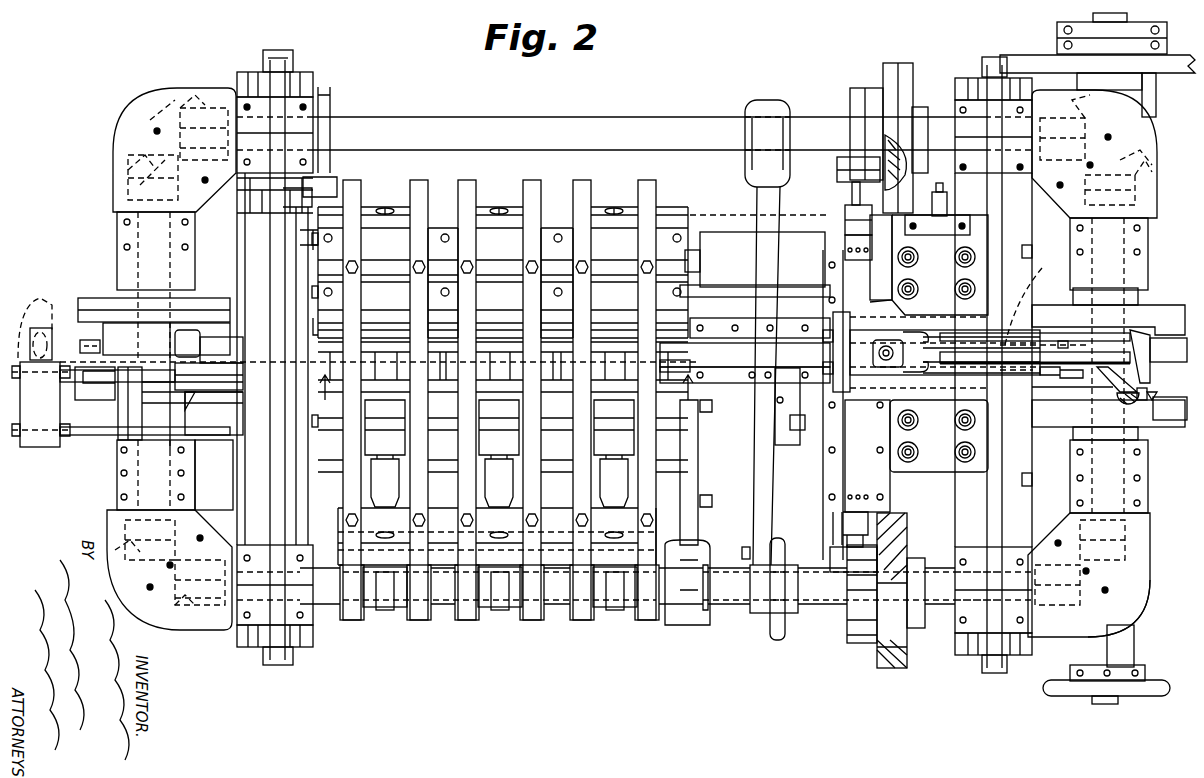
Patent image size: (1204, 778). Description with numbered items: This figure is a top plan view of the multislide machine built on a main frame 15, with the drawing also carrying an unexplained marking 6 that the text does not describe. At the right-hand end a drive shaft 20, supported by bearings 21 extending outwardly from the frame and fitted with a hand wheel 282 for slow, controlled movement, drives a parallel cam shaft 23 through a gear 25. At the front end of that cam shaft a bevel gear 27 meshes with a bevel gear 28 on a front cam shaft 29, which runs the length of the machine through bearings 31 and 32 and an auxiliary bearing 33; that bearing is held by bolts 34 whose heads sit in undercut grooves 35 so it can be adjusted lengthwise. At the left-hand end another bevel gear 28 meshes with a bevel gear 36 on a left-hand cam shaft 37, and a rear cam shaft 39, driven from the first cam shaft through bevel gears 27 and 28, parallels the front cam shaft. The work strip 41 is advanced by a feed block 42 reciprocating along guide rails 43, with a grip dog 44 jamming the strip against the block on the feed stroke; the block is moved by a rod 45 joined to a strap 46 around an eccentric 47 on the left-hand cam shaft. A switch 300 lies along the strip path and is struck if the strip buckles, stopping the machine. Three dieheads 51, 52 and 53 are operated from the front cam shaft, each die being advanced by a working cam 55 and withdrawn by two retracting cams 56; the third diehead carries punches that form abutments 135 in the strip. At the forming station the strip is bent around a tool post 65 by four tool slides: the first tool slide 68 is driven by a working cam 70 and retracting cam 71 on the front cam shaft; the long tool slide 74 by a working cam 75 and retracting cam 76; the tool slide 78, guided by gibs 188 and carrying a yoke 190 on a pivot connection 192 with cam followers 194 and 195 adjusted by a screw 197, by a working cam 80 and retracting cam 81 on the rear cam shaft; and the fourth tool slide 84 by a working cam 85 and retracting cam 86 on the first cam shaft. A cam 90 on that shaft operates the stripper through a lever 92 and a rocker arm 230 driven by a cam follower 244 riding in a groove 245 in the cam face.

The hinge pin 6 is at (500, 393).
The main frame 15 is at (700, 205).
The drive shaft 20 is at (1100, 700).
The bearings 21 is at (122, 228).
The cam shaft 23 is at (1140, 145).
The gear 25 is at (1165, 422).
The bevel gear 27 is at (1148, 170).
The bevel gear 28 is at (178, 85).
The cam shaft 29 is at (705, 628).
The bearing 31 is at (963, 130).
The bearing 32 is at (292, 100).
The auxiliary bearing 33 is at (748, 160).
The bolts 34 is at (700, 455).
The undercut grooves 35 is at (712, 425).
The bevel gear 36 is at (130, 180).
The cam shaft 37 is at (140, 488).
The cam shaft 39 is at (617, 117).
The strip 41 is at (40, 328).
The block 42 is at (32, 447).
The guide rails 43 is at (70, 382).
The grip dog 44 is at (44, 295).
The rod 45 is at (85, 400).
The strap 46 is at (93, 420).
The eccentric 47 is at (178, 422).
The diehead 51 is at (380, 175).
The diehead 52 is at (497, 175).
The diehead 53 is at (612, 175).
The working cam 55 is at (385, 615).
The retracting cams 56 is at (350, 620).
The tool post 65 is at (880, 345).
The first tool slide 68 is at (858, 478).
The working cam 70 is at (855, 645).
The retracting cam 71 is at (888, 668).
The tool slide 74 is at (220, 355).
The working cam 75 is at (128, 345).
The retracting cam 76 is at (90, 298).
The tool slide 78 is at (850, 272).
The working cam 80 is at (858, 88).
The retracting cam 81 is at (895, 75).
The fourth tool slide 84 is at (1032, 300).
The working cam 85 is at (1160, 352).
The retracting cam 86 is at (1183, 290).
The cam 90 is at (1160, 430).
The lever 92 is at (1158, 375).
The abutments 135 is at (825, 412).
The gibs 188 is at (840, 250).
The yoke 190 is at (845, 205).
The pivot connection 192 is at (790, 212).
The cam follower 194 is at (860, 160).
The cam follower 195 is at (880, 140).
The screw 197 is at (852, 190).
The rocker arm 230 is at (1035, 365).
The cam follower 244 is at (1150, 390).
The groove 245 is at (1125, 345).
The hand wheel 282 is at (1150, 697).
The switch 300 is at (80, 345).